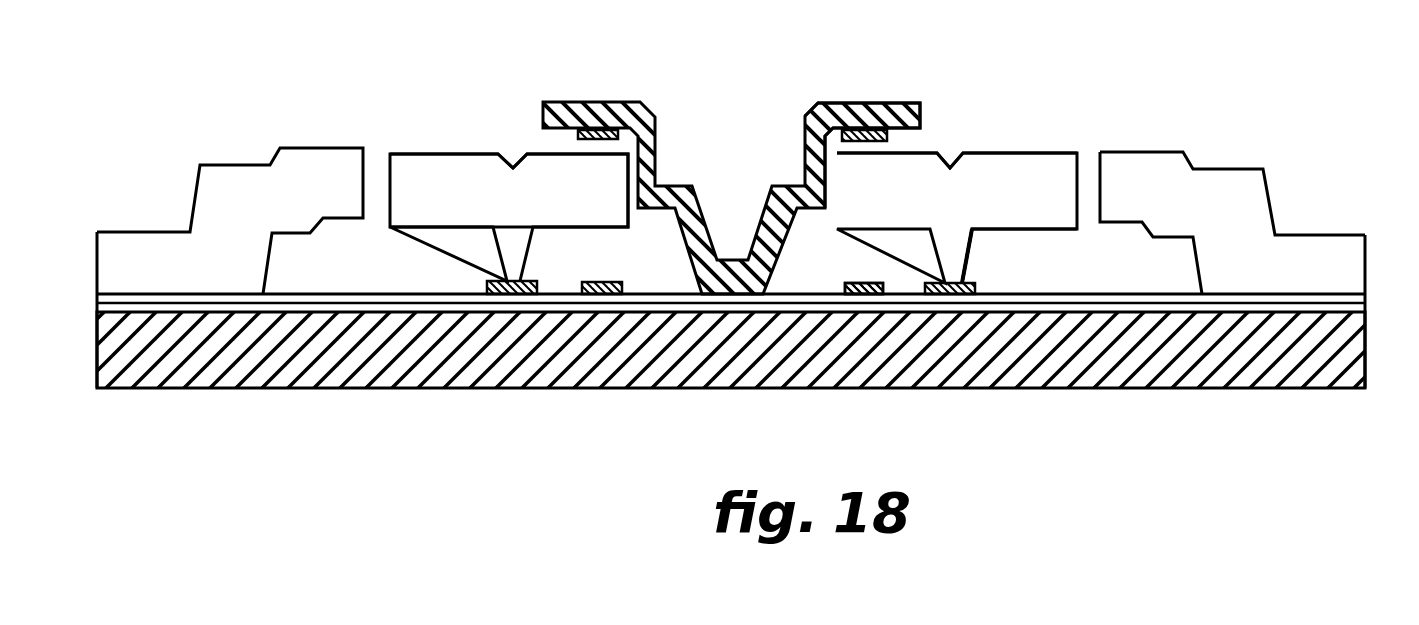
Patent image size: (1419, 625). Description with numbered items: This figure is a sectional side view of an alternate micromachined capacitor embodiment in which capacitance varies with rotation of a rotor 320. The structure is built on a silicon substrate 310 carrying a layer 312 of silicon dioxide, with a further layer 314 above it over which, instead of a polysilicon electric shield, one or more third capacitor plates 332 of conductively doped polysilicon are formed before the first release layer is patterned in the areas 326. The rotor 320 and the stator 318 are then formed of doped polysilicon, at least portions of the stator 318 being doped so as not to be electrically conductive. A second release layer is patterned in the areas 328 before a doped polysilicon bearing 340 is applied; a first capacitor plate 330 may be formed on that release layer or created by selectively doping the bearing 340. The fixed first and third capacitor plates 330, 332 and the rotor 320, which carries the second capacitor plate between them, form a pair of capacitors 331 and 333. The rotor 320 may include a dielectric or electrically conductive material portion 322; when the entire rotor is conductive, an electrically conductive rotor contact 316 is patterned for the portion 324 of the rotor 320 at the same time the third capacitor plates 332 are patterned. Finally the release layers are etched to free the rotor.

The silicon substrate 310 is at (1133, 375).
The layer of silicon dioxide 312 is at (1368, 312).
The layer 314 is at (1367, 296).
The rotor contact 316 is at (490, 281).
The stator 318 is at (1225, 173).
The rotor 320 is at (1090, 150).
The material portion 322 is at (1042, 232).
The portion of rotor 324 is at (960, 250).
The areas 326 is at (343, 273).
The areas 328 is at (540, 143).
The first capacitor plate 330 is at (930, 132).
The first capacitor 331 is at (925, 146).
The third capacitor plate 332 is at (843, 290).
The second capacitor 333 is at (876, 248).
The bearing 340 is at (657, 118).